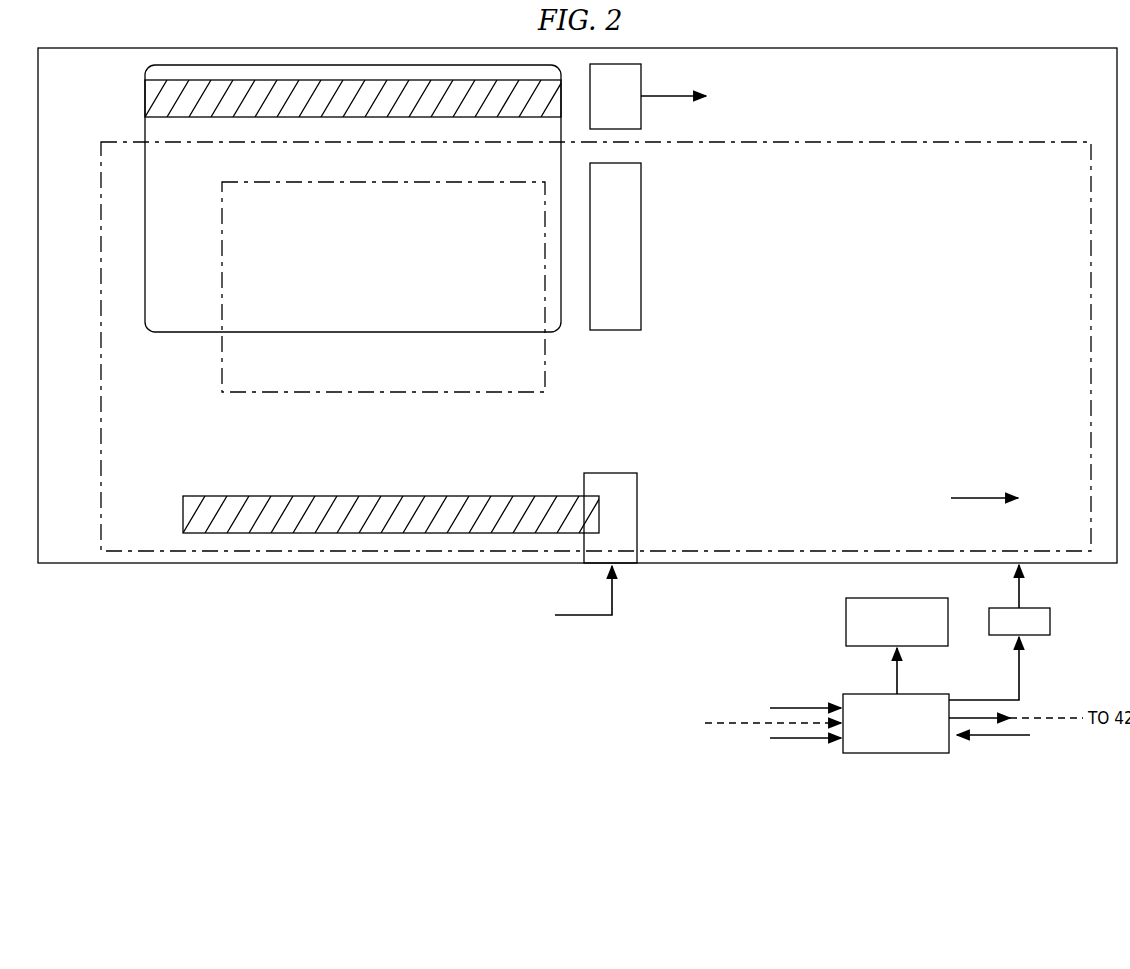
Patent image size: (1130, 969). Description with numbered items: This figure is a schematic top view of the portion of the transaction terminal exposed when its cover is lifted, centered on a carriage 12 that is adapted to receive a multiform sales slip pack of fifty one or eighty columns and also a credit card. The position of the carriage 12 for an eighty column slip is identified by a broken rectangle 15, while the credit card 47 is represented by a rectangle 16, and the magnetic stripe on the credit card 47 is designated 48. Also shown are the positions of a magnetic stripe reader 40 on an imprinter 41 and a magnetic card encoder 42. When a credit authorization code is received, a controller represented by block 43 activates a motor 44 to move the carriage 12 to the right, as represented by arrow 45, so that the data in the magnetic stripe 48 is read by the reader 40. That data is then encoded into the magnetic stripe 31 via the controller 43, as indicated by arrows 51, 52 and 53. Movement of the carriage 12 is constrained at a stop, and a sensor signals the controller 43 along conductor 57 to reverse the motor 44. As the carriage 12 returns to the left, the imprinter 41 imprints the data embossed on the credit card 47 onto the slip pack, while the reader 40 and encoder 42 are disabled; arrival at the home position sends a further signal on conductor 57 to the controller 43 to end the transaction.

The carriage 12 is at (365, 563).
The broken rectangle 15 is at (1033, 142).
The rectangle 16 is at (258, 393).
The magnetic stripe 31 is at (508, 496).
The magnetic stripe reader 40 is at (641, 80).
The imprinter 41 is at (612, 330).
The magnetic card encoder 42 is at (600, 473).
The controller 43 is at (858, 694).
The motor 44 is at (1040, 608).
The arrow 45 is at (975, 497).
The credit card 47 is at (180, 333).
The magnetic stripe 48 is at (145, 98).
The arrow 51 is at (652, 97).
The arrow 52 is at (795, 738).
The arrow 53 is at (614, 598).
The conductor 57 is at (975, 737).